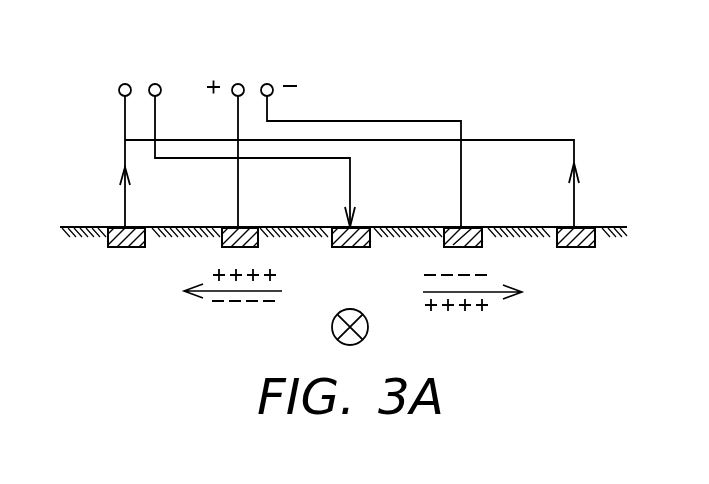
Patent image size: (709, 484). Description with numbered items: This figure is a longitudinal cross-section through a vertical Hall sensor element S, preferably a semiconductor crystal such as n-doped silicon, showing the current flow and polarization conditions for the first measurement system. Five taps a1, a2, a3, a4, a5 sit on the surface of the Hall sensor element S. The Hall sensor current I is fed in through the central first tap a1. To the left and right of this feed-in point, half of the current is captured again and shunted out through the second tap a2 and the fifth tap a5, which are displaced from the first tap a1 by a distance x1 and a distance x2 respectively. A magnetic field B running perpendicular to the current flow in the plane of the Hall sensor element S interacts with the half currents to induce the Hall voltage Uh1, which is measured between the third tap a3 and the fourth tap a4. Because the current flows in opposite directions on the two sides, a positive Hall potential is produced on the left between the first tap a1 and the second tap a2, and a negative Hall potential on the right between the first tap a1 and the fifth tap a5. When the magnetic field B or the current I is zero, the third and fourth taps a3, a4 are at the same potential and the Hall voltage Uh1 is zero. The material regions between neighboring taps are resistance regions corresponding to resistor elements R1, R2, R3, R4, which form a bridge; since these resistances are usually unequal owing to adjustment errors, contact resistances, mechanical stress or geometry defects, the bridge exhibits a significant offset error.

The Hall sensor current I is at (140, 79).
The Hall voltage Uh1 is at (252, 79).
The Hall sensor element S is at (97, 227).
The first tap a1 is at (361, 224).
The second tap a2 is at (134, 224).
The third tap a3 is at (248, 224).
The fourth tap a4 is at (471, 224).
The fifth tap a5 is at (583, 224).
The resistor element R1 is at (183, 246).
The resistor element R2 is at (295, 246).
The resistor element R3 is at (407, 246).
The resistor element R4 is at (519, 246).
The distance x1 is at (212, 305).
The distance x2 is at (489, 308).
The magnetic field B is at (359, 327).